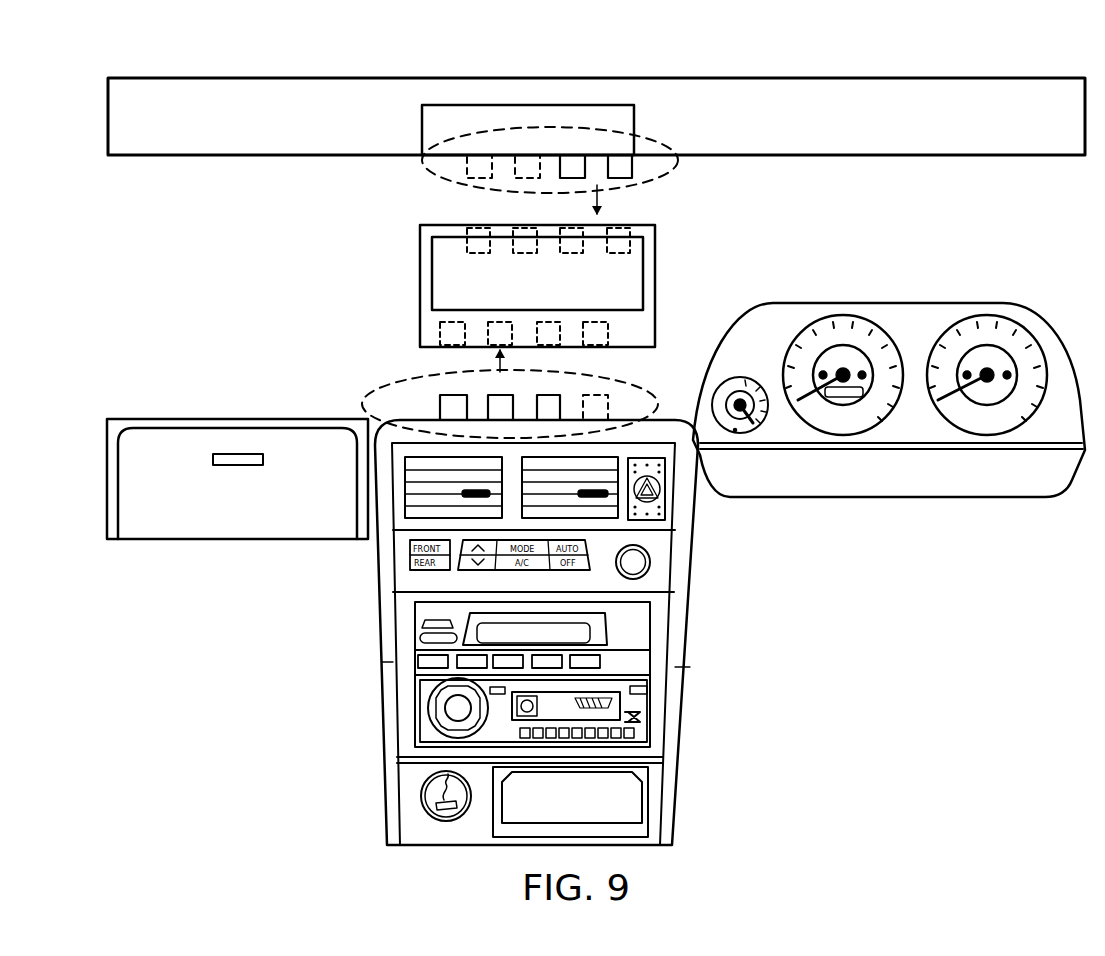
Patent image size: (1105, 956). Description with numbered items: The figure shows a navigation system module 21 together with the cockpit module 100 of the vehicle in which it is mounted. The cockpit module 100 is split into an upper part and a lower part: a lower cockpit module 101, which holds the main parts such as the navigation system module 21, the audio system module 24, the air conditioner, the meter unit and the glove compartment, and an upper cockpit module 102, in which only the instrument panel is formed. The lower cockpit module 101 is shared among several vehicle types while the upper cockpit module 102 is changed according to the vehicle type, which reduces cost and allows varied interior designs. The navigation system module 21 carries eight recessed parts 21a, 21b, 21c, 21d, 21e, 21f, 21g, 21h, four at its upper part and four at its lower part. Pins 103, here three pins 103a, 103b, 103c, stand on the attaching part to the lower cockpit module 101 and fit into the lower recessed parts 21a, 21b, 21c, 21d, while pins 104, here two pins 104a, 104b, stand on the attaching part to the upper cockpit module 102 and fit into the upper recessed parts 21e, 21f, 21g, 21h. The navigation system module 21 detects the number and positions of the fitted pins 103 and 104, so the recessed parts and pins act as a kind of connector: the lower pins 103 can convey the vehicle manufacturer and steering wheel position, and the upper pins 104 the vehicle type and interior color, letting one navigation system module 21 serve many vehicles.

The cockpit module 100 is at (967, 733).
The lower cockpit module 101 is at (252, 419).
The upper cockpit module 102 is at (255, 156).
The pins 103 is at (377, 412).
The pin 103a is at (452, 410).
The pin 103b is at (490, 408).
The pin 103c is at (547, 408).
The pins 104 is at (655, 140).
The pin 104a is at (620, 168).
The pin 104b is at (573, 168).
The navigation system module 21 is at (420, 268).
The recessed part 21a is at (457, 316).
The recessed part 21b is at (501, 316).
The recessed part 21c is at (553, 316).
The recessed part 21d is at (601, 316).
The recessed part 21e is at (621, 258).
The recessed part 21f is at (576, 258).
The recessed part 21g is at (528, 258).
The recessed part 21h is at (481, 258).
The audio system module 24 is at (640, 667).